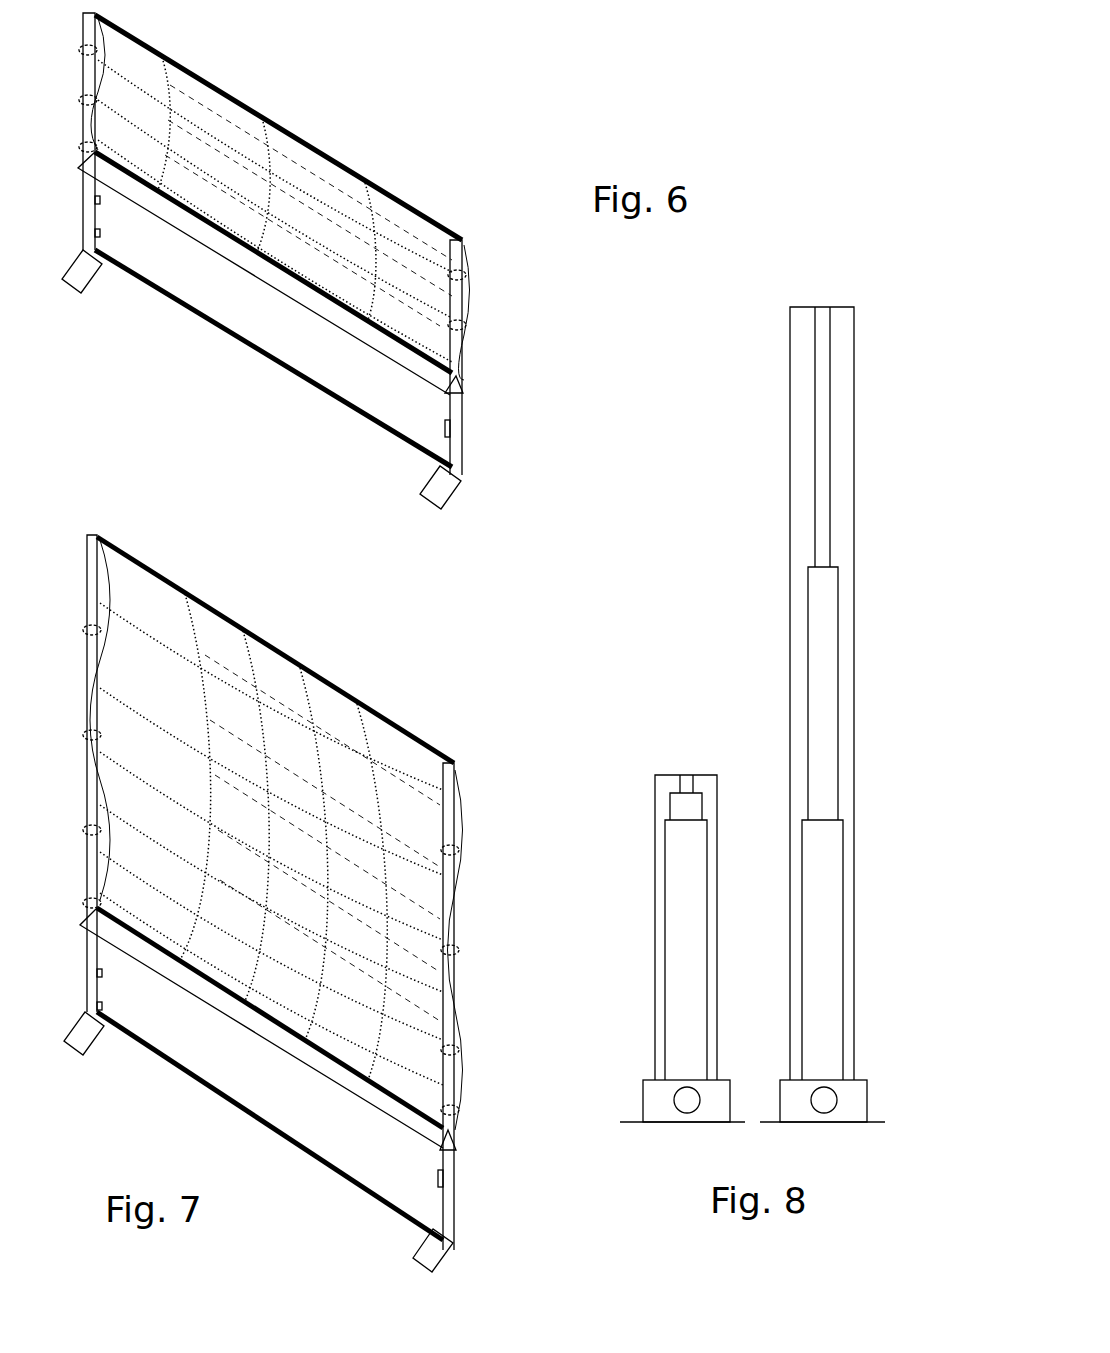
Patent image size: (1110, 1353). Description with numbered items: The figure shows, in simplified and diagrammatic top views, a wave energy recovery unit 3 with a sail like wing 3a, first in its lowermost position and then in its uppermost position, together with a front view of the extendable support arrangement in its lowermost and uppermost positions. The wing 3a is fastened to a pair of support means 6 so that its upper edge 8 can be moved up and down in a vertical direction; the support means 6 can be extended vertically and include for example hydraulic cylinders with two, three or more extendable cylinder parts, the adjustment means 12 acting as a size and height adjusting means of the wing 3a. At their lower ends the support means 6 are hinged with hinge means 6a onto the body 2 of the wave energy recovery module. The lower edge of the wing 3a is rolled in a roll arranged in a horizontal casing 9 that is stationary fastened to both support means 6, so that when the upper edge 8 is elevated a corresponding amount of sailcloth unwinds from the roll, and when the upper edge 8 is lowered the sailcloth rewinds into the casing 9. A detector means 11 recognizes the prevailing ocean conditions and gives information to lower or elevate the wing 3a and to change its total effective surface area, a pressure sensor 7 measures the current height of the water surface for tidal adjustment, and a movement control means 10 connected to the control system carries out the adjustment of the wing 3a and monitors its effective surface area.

In FIG. 8, the body 2 is at (632, 1119).
In FIG. 6, the recovery unit 3 is at (556, 381).
In FIG. 7, the recovery unit 3 is at (460, 651).
In FIG. 6, the sail like wing 3a is at (365, 188).
In FIG. 7, the sail like wing 3a is at (288, 675).
In FIG. 6, the support means 6 is at (458, 298).
In FIG. 7, the support means 6 is at (450, 878).
In FIG. 8, the support means 6 is at (793, 472).
In FIG. 6, the hinge means 6a is at (440, 495).
In FIG. 7, the hinge means 6a is at (437, 1262).
In FIG. 8, the hinge means 6a is at (724, 1097).
In FIG. 6, the pressure sensor 7 is at (95, 200).
In FIG. 7, the pressure sensor 7 is at (97, 975).
In FIG. 6, the upper edge 8 is at (278, 125).
In FIG. 7, the upper edge 8 is at (200, 600).
In FIG. 6, the horizontal casing 9 is at (300, 293).
In FIG. 7, the horizontal casing 9 is at (303, 1052).
In FIG. 6, the movement control means 10 is at (100, 233).
In FIG. 7, the movement control means 10 is at (103, 1008).
In FIG. 6, the detector means 11 is at (446, 428).
In FIG. 7, the detector means 11 is at (443, 1185).
In FIG. 8, the adjustment means 12 is at (812, 600).